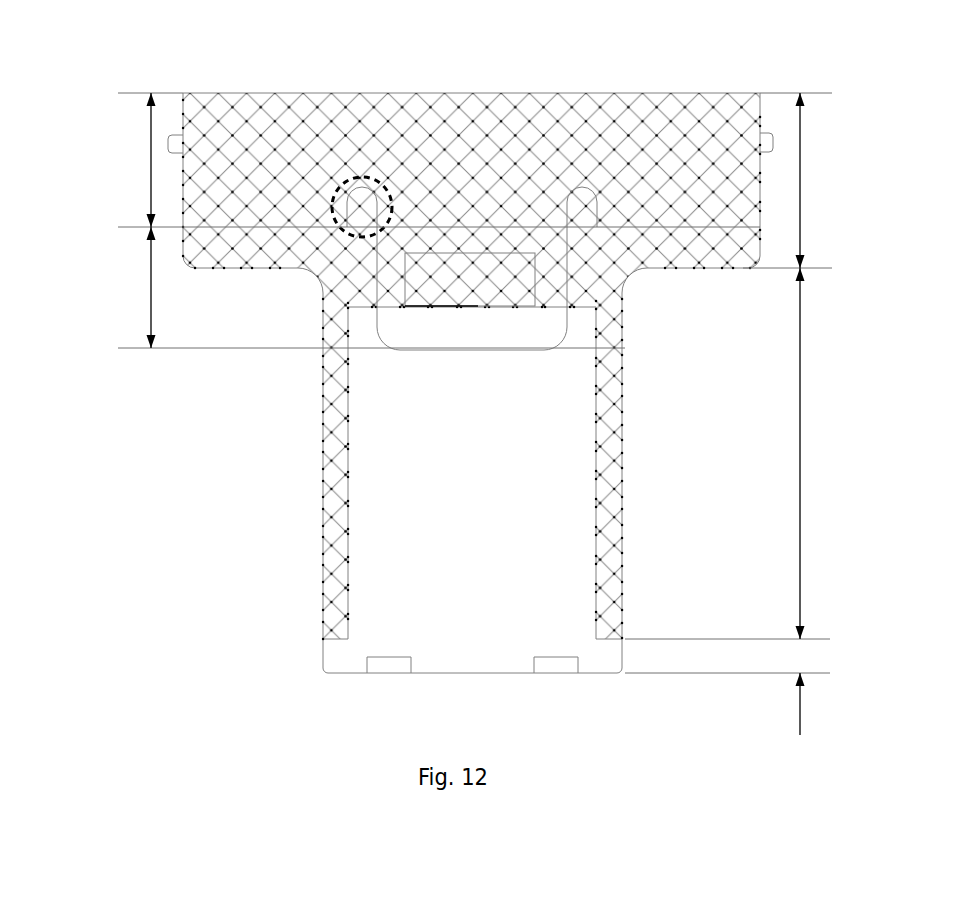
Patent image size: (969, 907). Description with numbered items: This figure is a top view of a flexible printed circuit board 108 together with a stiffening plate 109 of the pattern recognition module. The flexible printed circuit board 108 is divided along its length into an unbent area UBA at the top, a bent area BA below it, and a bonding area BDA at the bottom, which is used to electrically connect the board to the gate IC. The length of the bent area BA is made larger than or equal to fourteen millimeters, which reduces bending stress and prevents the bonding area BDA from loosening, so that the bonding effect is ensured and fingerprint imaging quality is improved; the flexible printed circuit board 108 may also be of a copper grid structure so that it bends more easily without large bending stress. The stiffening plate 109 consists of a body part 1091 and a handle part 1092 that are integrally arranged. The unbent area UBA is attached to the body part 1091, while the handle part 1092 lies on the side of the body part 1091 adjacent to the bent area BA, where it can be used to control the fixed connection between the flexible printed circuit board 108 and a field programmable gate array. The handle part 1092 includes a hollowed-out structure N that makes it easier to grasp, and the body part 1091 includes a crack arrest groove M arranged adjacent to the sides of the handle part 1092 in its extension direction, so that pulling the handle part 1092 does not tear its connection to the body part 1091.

The flexible printed circuit board 108 is at (323, 573).
The stiffening plate 109 is at (387, 220).
The body part 1091 is at (120, 160).
The handle part 1092 is at (120, 287).
The crack arrest groove M is at (362, 177).
The hollowed-out structure N is at (468, 295).
The unbent area UBA is at (808, 180).
The bent area BA is at (739, 453).
The bonding area BDA is at (751, 688).